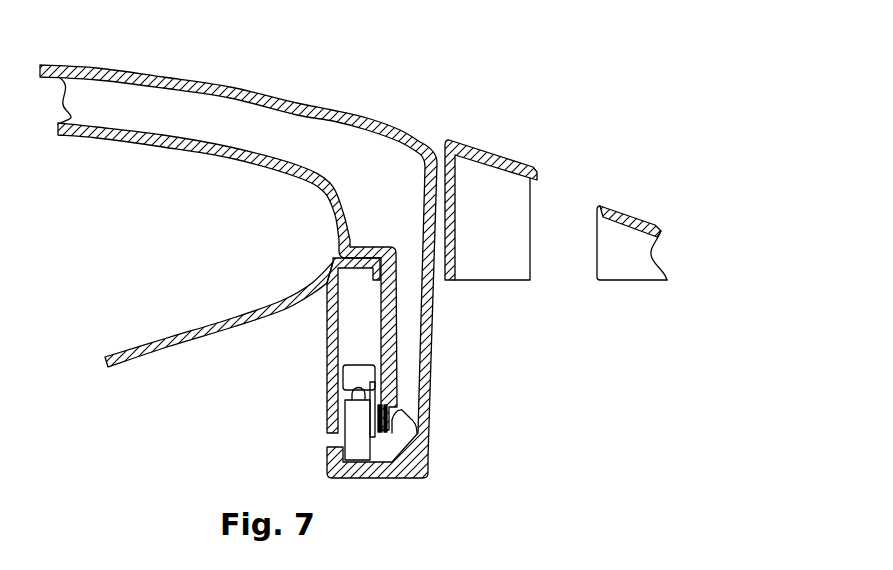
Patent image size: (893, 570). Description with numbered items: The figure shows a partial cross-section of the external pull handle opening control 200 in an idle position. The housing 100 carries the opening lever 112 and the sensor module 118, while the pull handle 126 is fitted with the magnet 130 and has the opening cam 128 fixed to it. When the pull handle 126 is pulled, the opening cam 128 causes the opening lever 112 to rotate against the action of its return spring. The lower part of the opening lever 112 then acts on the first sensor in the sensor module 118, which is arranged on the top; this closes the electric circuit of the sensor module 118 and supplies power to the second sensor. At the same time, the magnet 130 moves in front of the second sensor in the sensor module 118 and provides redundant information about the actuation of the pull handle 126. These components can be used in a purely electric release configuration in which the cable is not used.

The external opening control housing 100 is at (226, 334).
The opening lever 112 is at (352, 450).
The sensor module 118 is at (340, 366).
The pull handle 126 is at (187, 147).
The opening cam 128 is at (410, 478).
The magnet 130 is at (400, 412).
The external pull handle opening control 200 is at (730, 165).